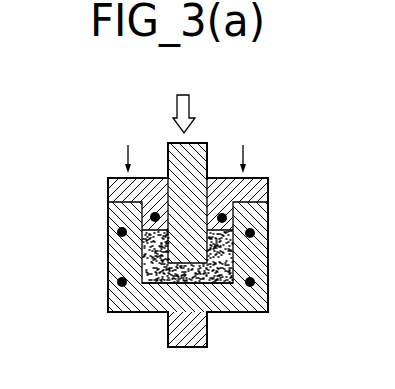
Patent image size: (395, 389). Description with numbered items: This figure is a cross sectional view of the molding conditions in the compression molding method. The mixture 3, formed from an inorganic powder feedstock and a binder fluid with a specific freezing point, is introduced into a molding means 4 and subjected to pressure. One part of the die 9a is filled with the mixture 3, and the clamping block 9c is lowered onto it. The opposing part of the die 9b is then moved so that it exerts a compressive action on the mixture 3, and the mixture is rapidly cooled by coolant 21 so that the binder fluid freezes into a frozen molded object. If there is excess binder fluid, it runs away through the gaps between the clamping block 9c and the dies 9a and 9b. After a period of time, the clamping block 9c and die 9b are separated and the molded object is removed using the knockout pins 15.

The mixture 3 is at (143, 255).
The molding means 4 is at (273, 283).
The die 9a is at (112, 311).
The die 9b is at (201, 142).
The clamping block 9c is at (258, 182).
The knockout pins 15 is at (207, 333).
The coolant 21 is at (122, 232).